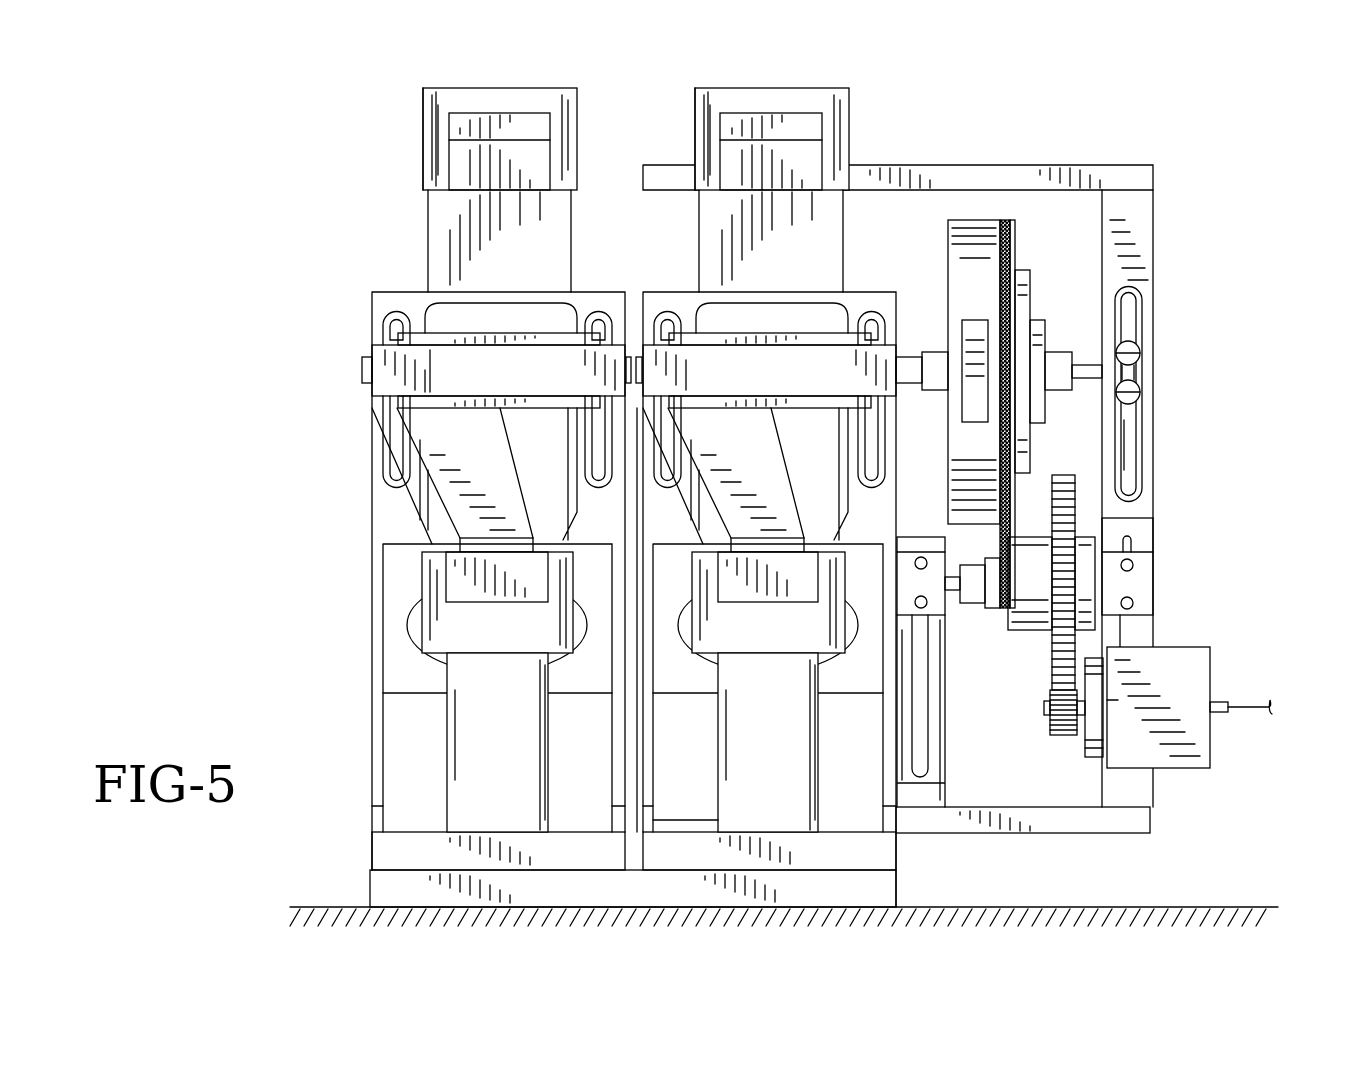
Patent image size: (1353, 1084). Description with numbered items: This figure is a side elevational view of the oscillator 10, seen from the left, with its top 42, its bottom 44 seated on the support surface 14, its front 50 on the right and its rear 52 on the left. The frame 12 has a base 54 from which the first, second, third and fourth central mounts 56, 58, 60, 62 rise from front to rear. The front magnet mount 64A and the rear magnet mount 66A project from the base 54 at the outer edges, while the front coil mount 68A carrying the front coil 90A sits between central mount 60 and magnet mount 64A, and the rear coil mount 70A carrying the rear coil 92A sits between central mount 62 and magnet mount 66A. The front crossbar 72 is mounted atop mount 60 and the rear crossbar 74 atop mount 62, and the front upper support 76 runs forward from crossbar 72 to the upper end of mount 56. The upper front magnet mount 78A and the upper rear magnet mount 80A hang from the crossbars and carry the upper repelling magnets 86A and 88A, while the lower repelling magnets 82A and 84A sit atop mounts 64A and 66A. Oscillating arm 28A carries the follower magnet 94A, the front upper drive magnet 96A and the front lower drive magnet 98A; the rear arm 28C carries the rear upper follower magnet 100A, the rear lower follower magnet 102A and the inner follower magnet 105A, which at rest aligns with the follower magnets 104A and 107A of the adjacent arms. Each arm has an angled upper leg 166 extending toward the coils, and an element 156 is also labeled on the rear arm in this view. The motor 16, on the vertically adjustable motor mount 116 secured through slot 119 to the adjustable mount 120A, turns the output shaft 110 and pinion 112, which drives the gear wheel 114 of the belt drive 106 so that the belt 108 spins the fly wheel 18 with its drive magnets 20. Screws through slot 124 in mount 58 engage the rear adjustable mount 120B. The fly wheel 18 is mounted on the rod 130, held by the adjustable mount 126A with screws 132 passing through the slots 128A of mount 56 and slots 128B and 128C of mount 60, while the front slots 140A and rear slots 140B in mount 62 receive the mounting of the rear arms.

The oscillator 10 is at (332, 213).
The frame 12 is at (1122, 835).
The support surface 14 is at (305, 905).
The electric motor 16 is at (1100, 720).
The fly wheel 18 is at (975, 218).
The drive magnets 20 is at (975, 330).
The oscillating arm 28A is at (808, 382).
The oscillating arm 28C is at (372, 355).
The top 42 is at (902, 78).
The bottom 44 is at (600, 912).
The front 50 is at (1215, 268).
The rear 52 is at (340, 408).
The base 54 is at (380, 847).
The first central mount 56 is at (1150, 226).
The second central mount 58 is at (945, 775).
The third central mount 60 is at (885, 512).
The fourth central mount 62 is at (372, 540).
The first front magnet mount 64A is at (792, 748).
The first rear magnet mount 66A is at (445, 630).
The first front coil mount 68A is at (686, 812).
The rear coil mount 70A is at (410, 740).
The front crossbar 72 is at (797, 125).
The rear crossbar 74 is at (527, 125).
The front upper support 76 is at (1128, 185).
The upper front magnet mount 78A is at (694, 113).
The upper rear magnet mount 80A is at (422, 115).
The lower front repelling magnet 82A is at (733, 592).
The lower rear repelling magnet 84A is at (455, 575).
The upper front repelling magnet 86A is at (735, 155).
The upper rear repelling magnet 88A is at (460, 165).
The first front electrically conductive coil 90A is at (700, 660).
The rear electrically conductive coil 92A is at (440, 660).
The follower magnet 94A is at (908, 352).
The front upper drive magnet 96A is at (735, 335).
The front lower drive magnet 98A is at (735, 402).
The rear upper follower magnet 100A is at (523, 330).
The rear lower follower magnet 102A is at (450, 408).
The follower magnet 104A is at (645, 367).
The follower magnet 105A is at (620, 365).
The belt drive 106 is at (1025, 632).
The follower magnet 107A is at (362, 370).
The belt 108 is at (1005, 218).
The rotational output shaft 110 is at (1048, 708).
The pinion 112 is at (1058, 738).
The gear wheel 114 is at (1076, 490).
The motor mount 116 is at (1212, 742).
The slot 119 is at (1130, 635).
The front vertically adjustable mount 120A is at (1142, 588).
The rear vertically adjustable mount 120B is at (892, 582).
The slot 124 is at (928, 680).
The vertically adjustable mount 126A is at (1130, 373).
The slots 128A is at (1132, 312).
The slots 128B is at (872, 320).
The slots 128C is at (668, 320).
The rod 130 is at (1132, 470).
The screws 132 is at (1132, 355).
The front slots 140A is at (605, 320).
The rear slots 140B is at (393, 325).
The pin 156 is at (447, 362).
The upper leg 166 is at (430, 508).